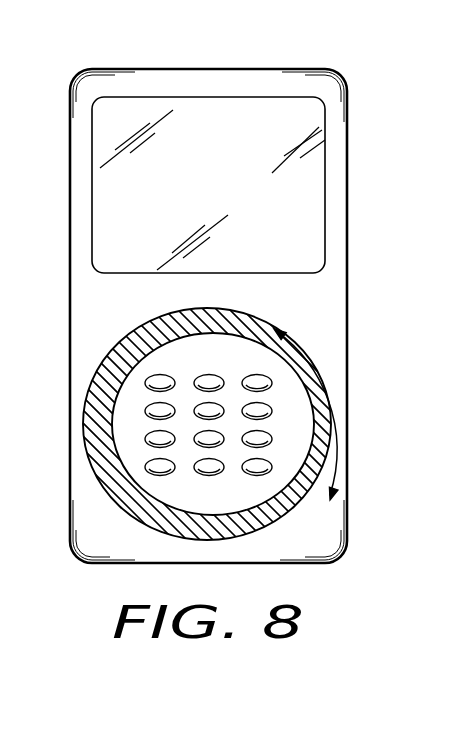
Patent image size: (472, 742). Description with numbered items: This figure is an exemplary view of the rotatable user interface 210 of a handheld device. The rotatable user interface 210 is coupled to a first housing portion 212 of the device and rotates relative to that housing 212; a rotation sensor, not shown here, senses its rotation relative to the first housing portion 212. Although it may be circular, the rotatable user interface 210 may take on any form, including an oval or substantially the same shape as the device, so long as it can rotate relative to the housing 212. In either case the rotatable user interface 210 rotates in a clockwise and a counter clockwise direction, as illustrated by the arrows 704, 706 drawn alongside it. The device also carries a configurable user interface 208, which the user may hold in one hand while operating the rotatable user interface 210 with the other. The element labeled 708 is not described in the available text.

The configurable user interface 208 is at (236, 291).
The first housing portion 212 is at (207, 68).
The rotatable user interface 210 is at (128, 338).
The outer rim of click wheel 708 is at (329, 399).
The arrow 704 is at (302, 352).
The arrow 706 is at (338, 471).